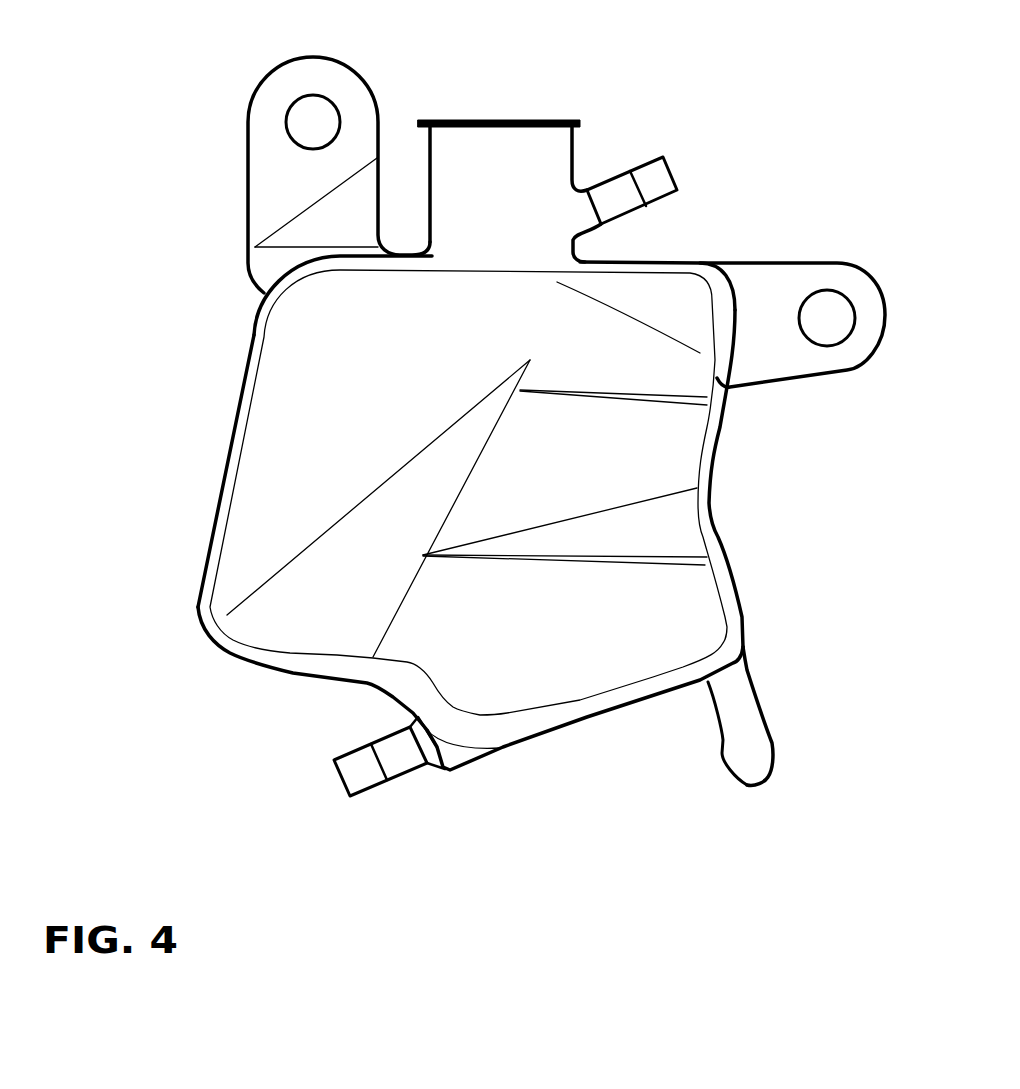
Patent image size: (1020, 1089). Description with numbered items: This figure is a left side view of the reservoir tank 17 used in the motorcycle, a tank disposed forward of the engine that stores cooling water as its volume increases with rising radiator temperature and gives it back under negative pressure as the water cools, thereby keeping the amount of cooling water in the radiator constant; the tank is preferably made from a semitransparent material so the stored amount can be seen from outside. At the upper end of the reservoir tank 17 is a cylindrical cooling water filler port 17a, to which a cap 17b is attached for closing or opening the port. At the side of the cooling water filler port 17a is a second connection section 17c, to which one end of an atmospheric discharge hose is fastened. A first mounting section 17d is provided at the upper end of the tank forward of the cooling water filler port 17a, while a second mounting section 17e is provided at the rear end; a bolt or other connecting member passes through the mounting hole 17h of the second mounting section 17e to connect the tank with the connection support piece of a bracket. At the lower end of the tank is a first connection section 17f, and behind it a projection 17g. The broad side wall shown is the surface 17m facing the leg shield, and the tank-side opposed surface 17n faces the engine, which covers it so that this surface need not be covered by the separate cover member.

The reservoir tank 17 is at (675, 262).
The cooling water filler port 17a is at (575, 160).
The cap 17b is at (505, 118).
The second connection section 17c is at (676, 167).
The first mounting section 17d is at (247, 185).
The second mounting section 17e is at (850, 372).
The first connection section 17f is at (410, 770).
The projection 17g is at (770, 735).
The mounting hole 17h is at (826, 303).
The surface facing the leg shield 17m is at (265, 453).
The tank-side opposed surface 17n is at (710, 505).